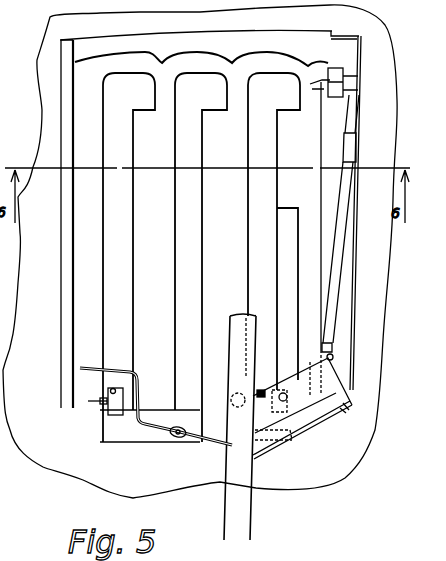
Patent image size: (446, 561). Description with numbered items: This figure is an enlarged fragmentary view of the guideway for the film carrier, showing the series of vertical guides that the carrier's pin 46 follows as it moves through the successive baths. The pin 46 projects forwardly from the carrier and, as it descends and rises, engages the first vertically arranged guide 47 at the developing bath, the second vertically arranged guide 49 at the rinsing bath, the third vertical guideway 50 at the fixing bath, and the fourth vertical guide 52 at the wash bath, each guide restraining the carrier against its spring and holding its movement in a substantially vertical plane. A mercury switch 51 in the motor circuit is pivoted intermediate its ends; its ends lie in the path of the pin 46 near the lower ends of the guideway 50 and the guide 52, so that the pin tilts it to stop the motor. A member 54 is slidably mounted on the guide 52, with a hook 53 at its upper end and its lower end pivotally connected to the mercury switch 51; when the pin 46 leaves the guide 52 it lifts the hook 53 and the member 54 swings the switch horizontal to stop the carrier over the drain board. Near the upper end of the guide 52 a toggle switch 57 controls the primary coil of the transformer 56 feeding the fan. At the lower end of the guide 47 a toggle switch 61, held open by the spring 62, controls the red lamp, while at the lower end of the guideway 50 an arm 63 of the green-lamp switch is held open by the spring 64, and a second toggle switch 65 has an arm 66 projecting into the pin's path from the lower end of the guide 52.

The pin 46 is at (240, 386).
The guide 47 is at (108, 297).
The second vertically arranged guide 49 is at (196, 188).
The third vertical guideway 50 is at (251, 268).
The mercury switch 51 is at (296, 429).
The fourth vertical guide 52 is at (353, 318).
The hook 53 is at (331, 30).
The member 54 is at (341, 255).
The transformer 56 is at (321, 85).
The toggle switch 57 is at (345, 78).
The toggle switch 61 is at (104, 404).
The spring 62 is at (106, 391).
The arm 63 is at (234, 422).
The spring 64 is at (240, 382).
The second toggle switch 65 is at (346, 408).
The arm 66 is at (316, 369).